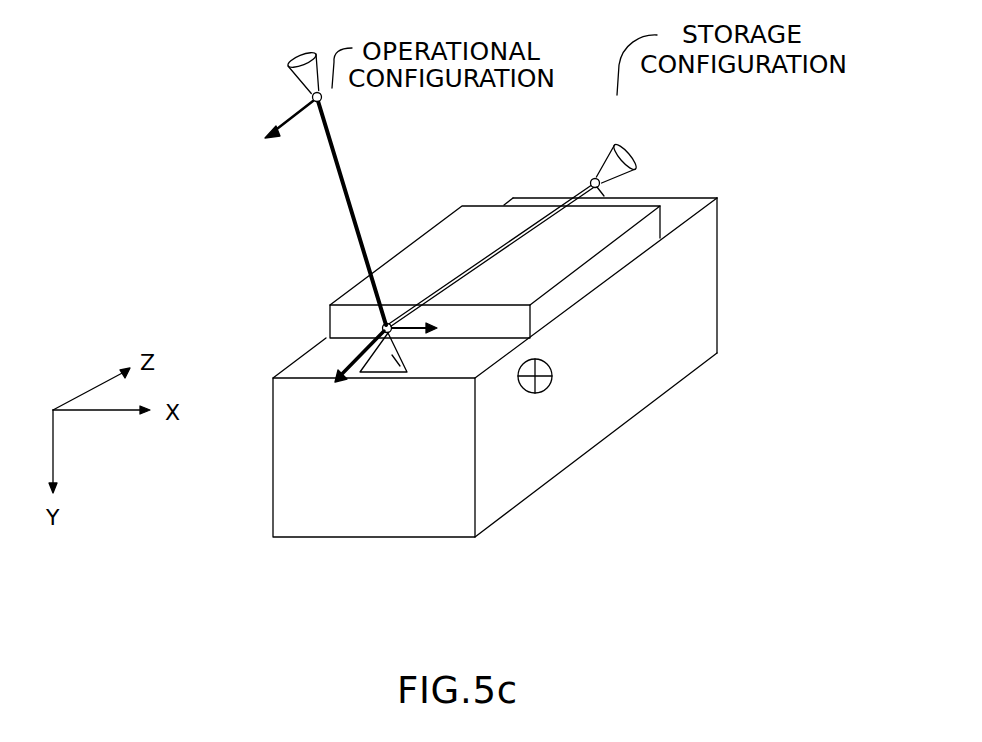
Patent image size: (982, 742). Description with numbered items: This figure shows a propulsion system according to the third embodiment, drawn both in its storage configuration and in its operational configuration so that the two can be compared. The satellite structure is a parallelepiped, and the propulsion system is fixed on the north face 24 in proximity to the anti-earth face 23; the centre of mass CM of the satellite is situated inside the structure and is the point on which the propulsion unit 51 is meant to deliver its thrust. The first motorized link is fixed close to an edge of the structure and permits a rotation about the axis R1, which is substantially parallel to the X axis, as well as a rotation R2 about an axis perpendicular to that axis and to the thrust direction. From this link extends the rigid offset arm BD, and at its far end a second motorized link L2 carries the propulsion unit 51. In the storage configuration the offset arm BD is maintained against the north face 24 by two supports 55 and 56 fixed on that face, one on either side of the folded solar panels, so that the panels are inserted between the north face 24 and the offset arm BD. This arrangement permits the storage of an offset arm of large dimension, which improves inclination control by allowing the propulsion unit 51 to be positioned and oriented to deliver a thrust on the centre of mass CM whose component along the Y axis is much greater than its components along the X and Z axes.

The anti-earth face 23 is at (435, 525).
The north face 24 is at (318, 360).
The propulsion unit 51 is at (631, 158).
The support 55 is at (400, 373).
The support 56 is at (611, 193).
The second motorized link L2 is at (592, 180).
The axis of rotation of the first motorized link R1 is at (413, 330).
The rotation of the first motorized link R2 is at (362, 374).
The rigid offset arm BD is at (525, 233).
The centre of mass CM is at (552, 378).